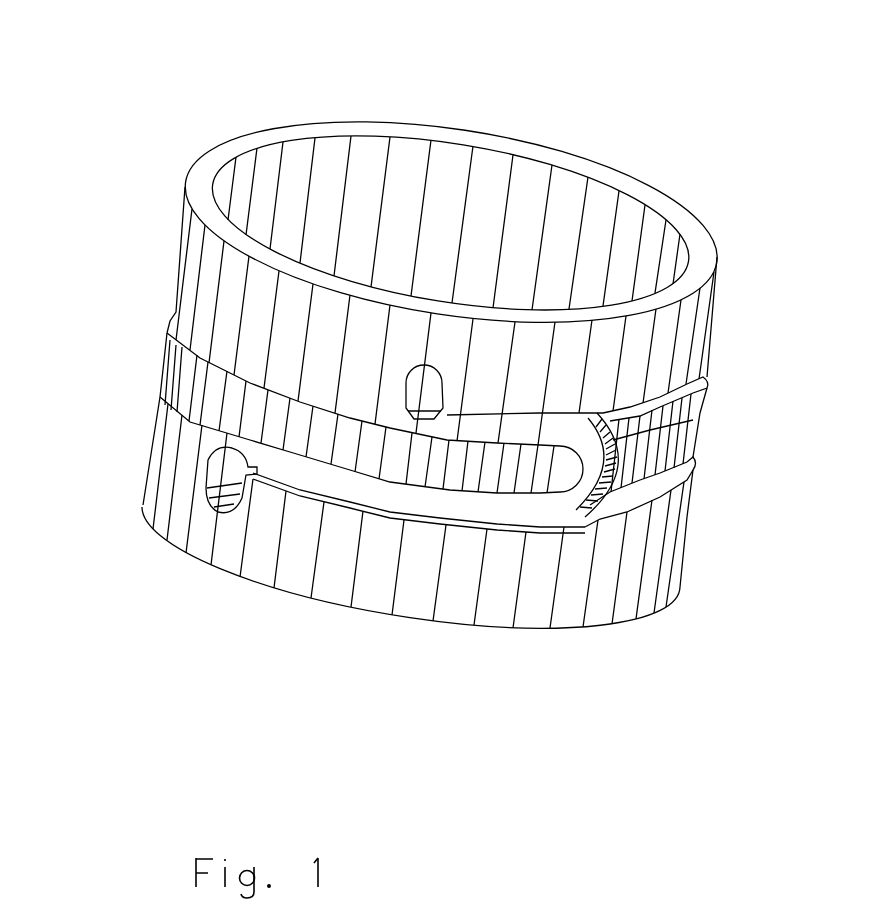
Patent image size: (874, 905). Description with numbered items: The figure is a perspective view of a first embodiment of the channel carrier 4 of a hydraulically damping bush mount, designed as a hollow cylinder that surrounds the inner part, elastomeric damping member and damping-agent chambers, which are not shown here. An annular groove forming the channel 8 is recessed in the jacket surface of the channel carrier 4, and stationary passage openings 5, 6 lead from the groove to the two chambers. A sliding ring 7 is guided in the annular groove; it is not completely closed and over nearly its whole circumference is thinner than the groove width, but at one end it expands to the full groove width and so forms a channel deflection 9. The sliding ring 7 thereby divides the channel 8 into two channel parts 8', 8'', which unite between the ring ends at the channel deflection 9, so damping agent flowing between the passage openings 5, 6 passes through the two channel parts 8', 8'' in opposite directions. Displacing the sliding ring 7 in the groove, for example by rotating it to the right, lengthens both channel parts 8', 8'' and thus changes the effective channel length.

The channel carrier 4 is at (324, 326).
The passage opening 5 is at (425, 392).
The passage opening 6 is at (228, 477).
The sliding ring 7 is at (505, 478).
The channel 8 is at (695, 430).
The channel part 8' is at (643, 329).
The channel part 8'' is at (419, 606).
The channel deflection 9 is at (625, 503).